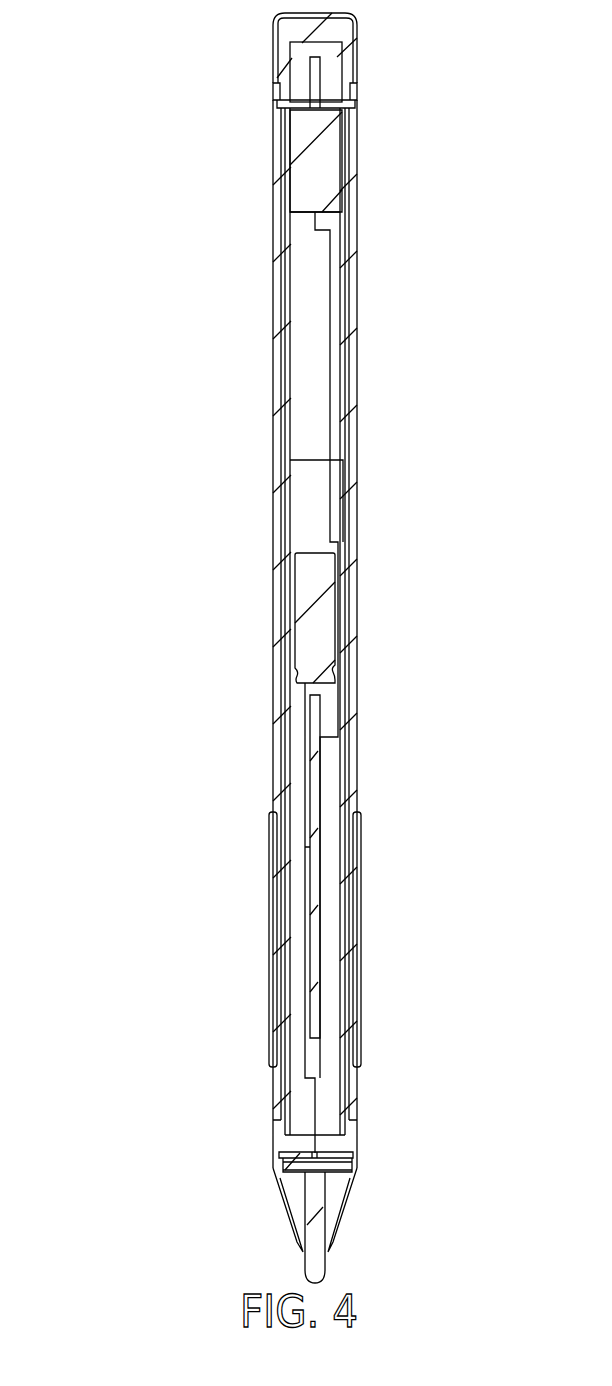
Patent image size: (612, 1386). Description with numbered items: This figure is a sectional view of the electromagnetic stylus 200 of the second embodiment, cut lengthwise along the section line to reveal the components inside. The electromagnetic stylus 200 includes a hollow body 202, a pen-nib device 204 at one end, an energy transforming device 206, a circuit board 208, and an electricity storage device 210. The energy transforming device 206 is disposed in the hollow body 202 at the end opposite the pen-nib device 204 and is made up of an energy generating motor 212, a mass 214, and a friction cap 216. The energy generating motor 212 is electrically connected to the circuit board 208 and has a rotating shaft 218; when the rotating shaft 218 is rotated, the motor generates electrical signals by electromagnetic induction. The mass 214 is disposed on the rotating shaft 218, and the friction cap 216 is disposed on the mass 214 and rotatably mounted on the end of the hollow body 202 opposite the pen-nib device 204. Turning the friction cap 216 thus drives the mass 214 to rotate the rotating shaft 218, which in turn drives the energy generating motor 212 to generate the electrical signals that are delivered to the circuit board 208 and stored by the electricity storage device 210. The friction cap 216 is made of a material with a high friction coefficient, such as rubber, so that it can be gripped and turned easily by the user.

The electromagnetic stylus 200 is at (122, 112).
The hollow body 202 is at (277, 386).
The pen-nib device 204 is at (340, 1170).
The energy transforming device 206 is at (425, 15).
The circuit board 208 is at (320, 781).
The electricity storage device 210 is at (333, 615).
The energy generating motor 212 is at (335, 164).
The mass 214 is at (338, 68).
The friction cap 216 is at (338, 36).
The rotating shaft 218 is at (313, 88).